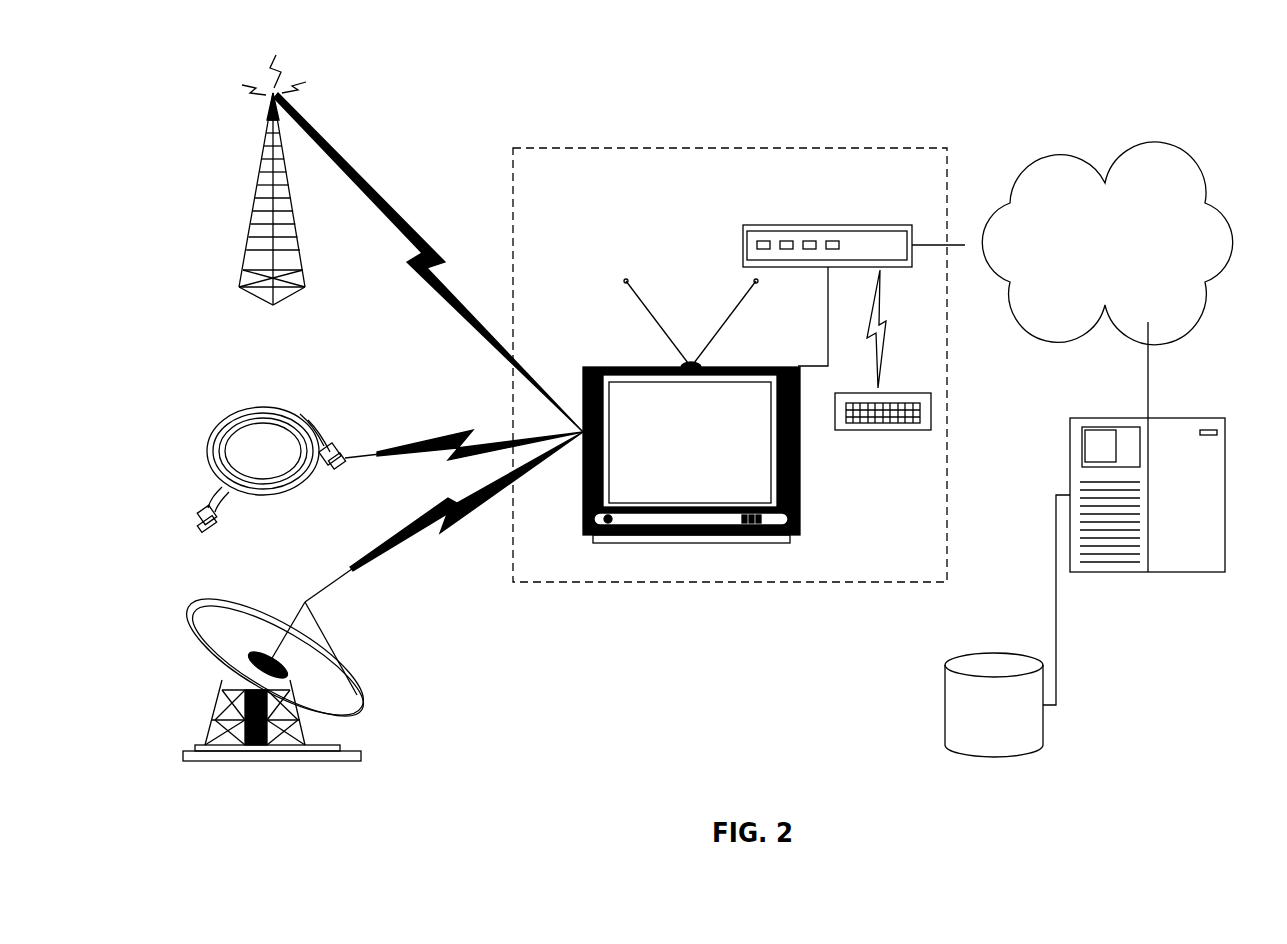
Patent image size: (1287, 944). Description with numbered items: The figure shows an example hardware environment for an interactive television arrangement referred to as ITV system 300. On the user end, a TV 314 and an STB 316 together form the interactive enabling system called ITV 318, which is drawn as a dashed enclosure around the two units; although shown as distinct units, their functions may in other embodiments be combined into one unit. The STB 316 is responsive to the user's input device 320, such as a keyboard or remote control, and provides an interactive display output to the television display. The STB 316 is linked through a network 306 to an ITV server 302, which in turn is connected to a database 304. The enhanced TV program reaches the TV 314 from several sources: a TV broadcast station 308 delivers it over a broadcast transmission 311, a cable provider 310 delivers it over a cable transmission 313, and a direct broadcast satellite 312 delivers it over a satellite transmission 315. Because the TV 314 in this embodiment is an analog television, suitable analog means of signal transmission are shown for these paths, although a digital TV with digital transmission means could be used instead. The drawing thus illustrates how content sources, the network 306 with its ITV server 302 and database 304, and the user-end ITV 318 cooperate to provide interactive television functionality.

The ITV system 300 is at (1100, 68).
The ITV server 302 is at (1080, 416).
The database 304 is at (994, 653).
The network 306 is at (1058, 166).
The TV broadcast station 308 is at (255, 200).
The cable provider 310 is at (258, 406).
The broadcast transmission 311 is at (426, 238).
The direct broadcast satellite 312 is at (195, 747).
The cable transmission 313 is at (396, 442).
The TV 314 is at (583, 367).
The satellite transmission 315 is at (362, 556).
The STB 316 is at (745, 225).
The ITV 318 is at (577, 148).
The input device 320 is at (883, 362).